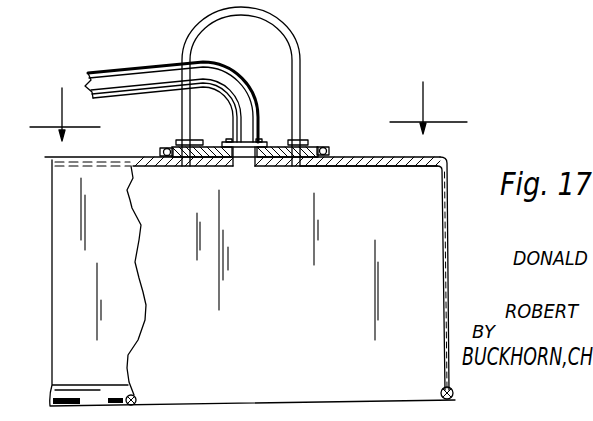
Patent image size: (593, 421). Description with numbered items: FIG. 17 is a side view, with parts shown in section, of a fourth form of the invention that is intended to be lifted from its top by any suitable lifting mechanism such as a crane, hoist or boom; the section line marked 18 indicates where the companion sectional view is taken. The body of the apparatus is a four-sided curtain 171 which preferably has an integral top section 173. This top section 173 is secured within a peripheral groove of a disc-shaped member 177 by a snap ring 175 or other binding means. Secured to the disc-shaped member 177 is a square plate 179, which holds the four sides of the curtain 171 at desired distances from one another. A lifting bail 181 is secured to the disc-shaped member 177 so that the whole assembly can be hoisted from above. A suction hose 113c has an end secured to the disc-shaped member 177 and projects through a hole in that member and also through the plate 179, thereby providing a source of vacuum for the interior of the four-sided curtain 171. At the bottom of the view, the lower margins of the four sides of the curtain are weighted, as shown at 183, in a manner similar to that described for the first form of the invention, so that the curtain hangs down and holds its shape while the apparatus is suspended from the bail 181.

The suction hose 113c is at (218, 86).
The four-sided curtain 171 is at (446, 246).
The integral top section 173 is at (397, 155).
The snap ring 175 is at (328, 148).
The disc-shaped member 177 is at (307, 147).
The square plate 179 is at (384, 160).
The lifting bail 181 is at (300, 58).
The weighted lower margins 183 is at (442, 393).
The section line 18- 18 is at (248, 111).